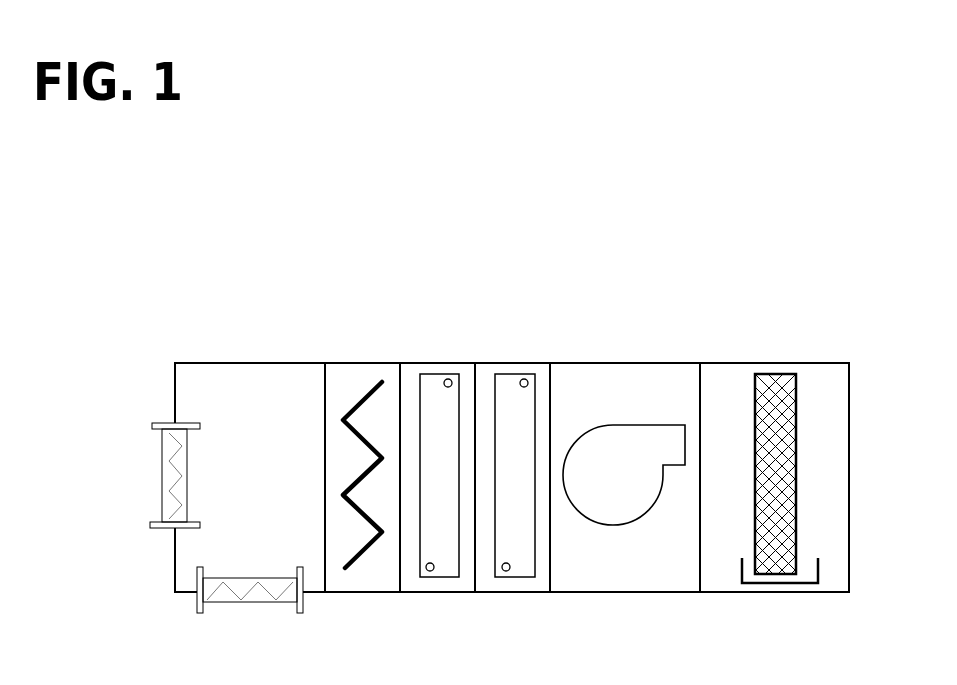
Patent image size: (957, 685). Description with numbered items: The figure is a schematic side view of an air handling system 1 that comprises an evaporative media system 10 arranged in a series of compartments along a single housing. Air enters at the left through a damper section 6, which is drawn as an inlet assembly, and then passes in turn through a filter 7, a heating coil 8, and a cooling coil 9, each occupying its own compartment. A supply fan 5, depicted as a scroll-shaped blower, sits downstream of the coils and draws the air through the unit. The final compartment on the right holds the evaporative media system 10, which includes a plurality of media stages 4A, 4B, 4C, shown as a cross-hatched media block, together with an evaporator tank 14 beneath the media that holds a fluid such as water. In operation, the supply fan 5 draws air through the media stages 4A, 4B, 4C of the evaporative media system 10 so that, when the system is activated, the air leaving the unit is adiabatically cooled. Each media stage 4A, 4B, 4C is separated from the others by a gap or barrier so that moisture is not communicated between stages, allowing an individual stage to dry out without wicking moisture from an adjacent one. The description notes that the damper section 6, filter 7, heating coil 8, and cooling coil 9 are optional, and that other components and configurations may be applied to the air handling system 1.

The air handling system 1 is at (177, 242).
The media stage 4A is at (804, 468).
The media stage 4B is at (804, 468).
The media stage 4C is at (768, 373).
The supply fan 5 is at (612, 592).
The damper section 6 is at (305, 592).
The filter 7 is at (358, 592).
The heating coil 8 is at (423, 592).
The cooling coil 9 is at (508, 592).
The evaporative media system 10 is at (717, 592).
The evaporator tank 14 is at (792, 584).